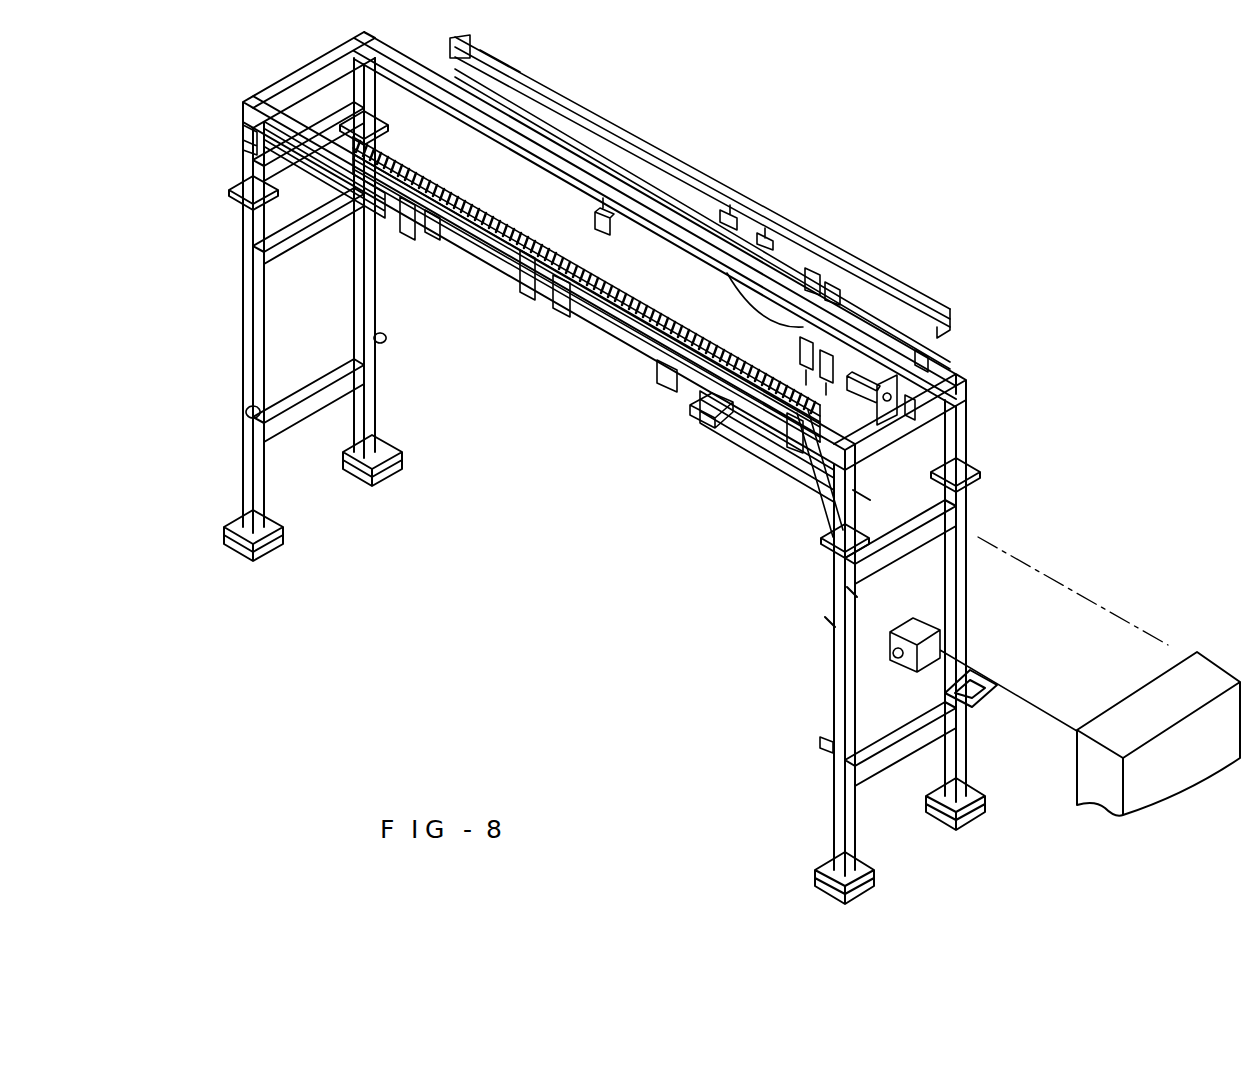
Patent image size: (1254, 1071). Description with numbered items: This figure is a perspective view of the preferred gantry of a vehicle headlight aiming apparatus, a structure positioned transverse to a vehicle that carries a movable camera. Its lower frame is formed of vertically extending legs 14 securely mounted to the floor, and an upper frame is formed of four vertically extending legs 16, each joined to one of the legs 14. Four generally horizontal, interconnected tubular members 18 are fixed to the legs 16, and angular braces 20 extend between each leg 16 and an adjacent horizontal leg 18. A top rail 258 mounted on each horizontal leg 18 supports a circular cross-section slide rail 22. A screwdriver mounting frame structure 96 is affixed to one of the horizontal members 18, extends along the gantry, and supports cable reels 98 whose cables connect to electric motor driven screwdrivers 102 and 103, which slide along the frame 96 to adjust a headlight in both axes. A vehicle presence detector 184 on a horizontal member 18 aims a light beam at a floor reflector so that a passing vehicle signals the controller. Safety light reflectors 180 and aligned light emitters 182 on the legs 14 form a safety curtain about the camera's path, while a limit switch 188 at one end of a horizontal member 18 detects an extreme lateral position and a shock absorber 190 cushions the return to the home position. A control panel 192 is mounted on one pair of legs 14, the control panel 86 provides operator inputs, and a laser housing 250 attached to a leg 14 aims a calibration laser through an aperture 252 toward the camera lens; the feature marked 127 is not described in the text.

The vertically extending legs 14 is at (228, 351).
The vertically extending legs 16 is at (358, 88).
The horizontally extending tubular members 18 is at (273, 82).
The angular braces 20 is at (810, 483).
The slide rails 22 is at (470, 80).
The control panel 86 is at (330, 125).
The screwdriver mounting frame structure 96 is at (853, 270).
The cable reels 98 is at (807, 270).
The electric motor driven screwdriver 102 is at (803, 350).
The screwdriver 103 is at (820, 373).
The rail surface 127 is at (672, 62).
The safety light reflectors 180 is at (382, 333).
The light emitters 182 is at (820, 742).
The vehicle presence detector 184 is at (600, 222).
The limit switch 188 is at (860, 462).
The shock absorber 190 is at (867, 380).
The control panel 192 is at (1207, 667).
The housing 250 is at (938, 633).
The aperture 252 is at (900, 657).
The top rail 258 is at (927, 357).